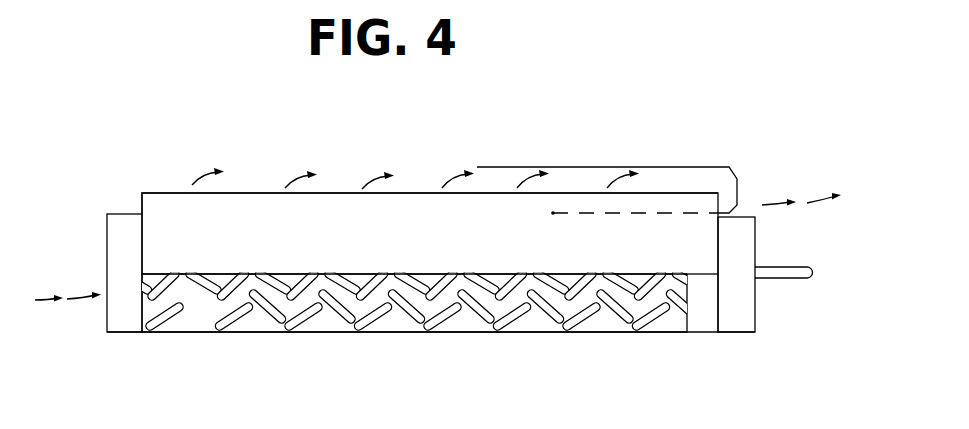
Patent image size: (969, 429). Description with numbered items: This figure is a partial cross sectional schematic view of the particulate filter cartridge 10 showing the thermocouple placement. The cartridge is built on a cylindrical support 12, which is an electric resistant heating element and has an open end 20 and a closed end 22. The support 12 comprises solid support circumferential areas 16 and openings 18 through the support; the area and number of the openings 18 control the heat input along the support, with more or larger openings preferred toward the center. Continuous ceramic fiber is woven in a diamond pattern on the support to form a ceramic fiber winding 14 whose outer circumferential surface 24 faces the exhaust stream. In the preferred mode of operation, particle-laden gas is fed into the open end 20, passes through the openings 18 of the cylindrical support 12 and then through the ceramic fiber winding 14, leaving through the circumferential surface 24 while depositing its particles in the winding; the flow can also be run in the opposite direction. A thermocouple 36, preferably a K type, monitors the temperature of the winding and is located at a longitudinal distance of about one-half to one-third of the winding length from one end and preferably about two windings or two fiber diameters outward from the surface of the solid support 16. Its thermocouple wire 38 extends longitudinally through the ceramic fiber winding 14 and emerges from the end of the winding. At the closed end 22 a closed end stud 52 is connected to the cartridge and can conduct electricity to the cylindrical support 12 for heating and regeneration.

The filter cartridge 10 is at (241, 150).
The cylindrical support 12 is at (733, 323).
The ceramic fiber winding 14 is at (343, 192).
The solid support circumferential areas 16 is at (670, 320).
The openings 18 is at (542, 318).
The open end 20 is at (107, 243).
The closed end 22 is at (757, 310).
The outer circumferential surface 24 is at (155, 200).
The thermocouple 36 is at (554, 214).
The thermocouple wire 38 is at (648, 166).
The closed end stud 52 is at (793, 265).